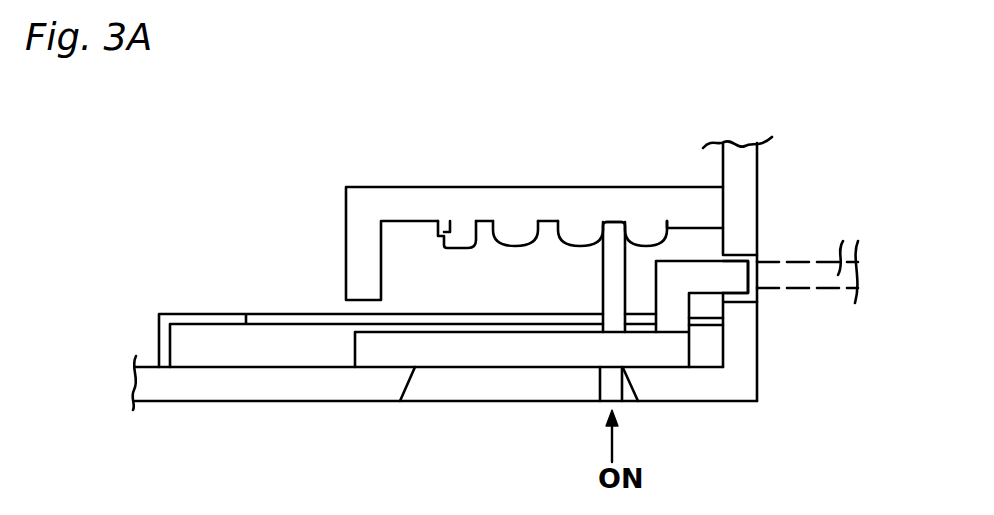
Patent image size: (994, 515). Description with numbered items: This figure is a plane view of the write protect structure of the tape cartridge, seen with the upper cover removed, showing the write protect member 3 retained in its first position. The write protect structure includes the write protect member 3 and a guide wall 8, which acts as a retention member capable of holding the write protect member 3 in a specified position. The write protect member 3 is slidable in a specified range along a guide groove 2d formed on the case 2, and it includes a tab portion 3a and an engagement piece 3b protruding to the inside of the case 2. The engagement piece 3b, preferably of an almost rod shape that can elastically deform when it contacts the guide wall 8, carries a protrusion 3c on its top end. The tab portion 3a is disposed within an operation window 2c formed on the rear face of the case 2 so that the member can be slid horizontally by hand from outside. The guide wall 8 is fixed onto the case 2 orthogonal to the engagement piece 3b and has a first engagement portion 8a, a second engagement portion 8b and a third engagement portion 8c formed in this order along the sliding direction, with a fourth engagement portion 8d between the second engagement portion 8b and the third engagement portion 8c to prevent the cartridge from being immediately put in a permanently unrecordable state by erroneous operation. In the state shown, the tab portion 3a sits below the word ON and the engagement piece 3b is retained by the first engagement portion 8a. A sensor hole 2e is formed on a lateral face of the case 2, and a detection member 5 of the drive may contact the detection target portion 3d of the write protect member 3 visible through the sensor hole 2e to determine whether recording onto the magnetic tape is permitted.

The case 2 is at (194, 386).
The operation window 2c is at (458, 388).
The guide groove 2d is at (262, 350).
The sensor hole 2e is at (738, 298).
The write protect member 3 is at (502, 350).
The tab portion 3a is at (610, 388).
The engagement piece 3b is at (640, 244).
The protrusion 3c is at (618, 258).
The detection target portion 3d is at (740, 268).
The detection member 5 is at (838, 264).
The guide wall 8 is at (362, 229).
The first engagement portion 8a is at (620, 222).
The second engagement portion 8b is at (548, 219).
The third engagement portion 8c is at (437, 219).
The fourth engagement portion 8d is at (486, 219).